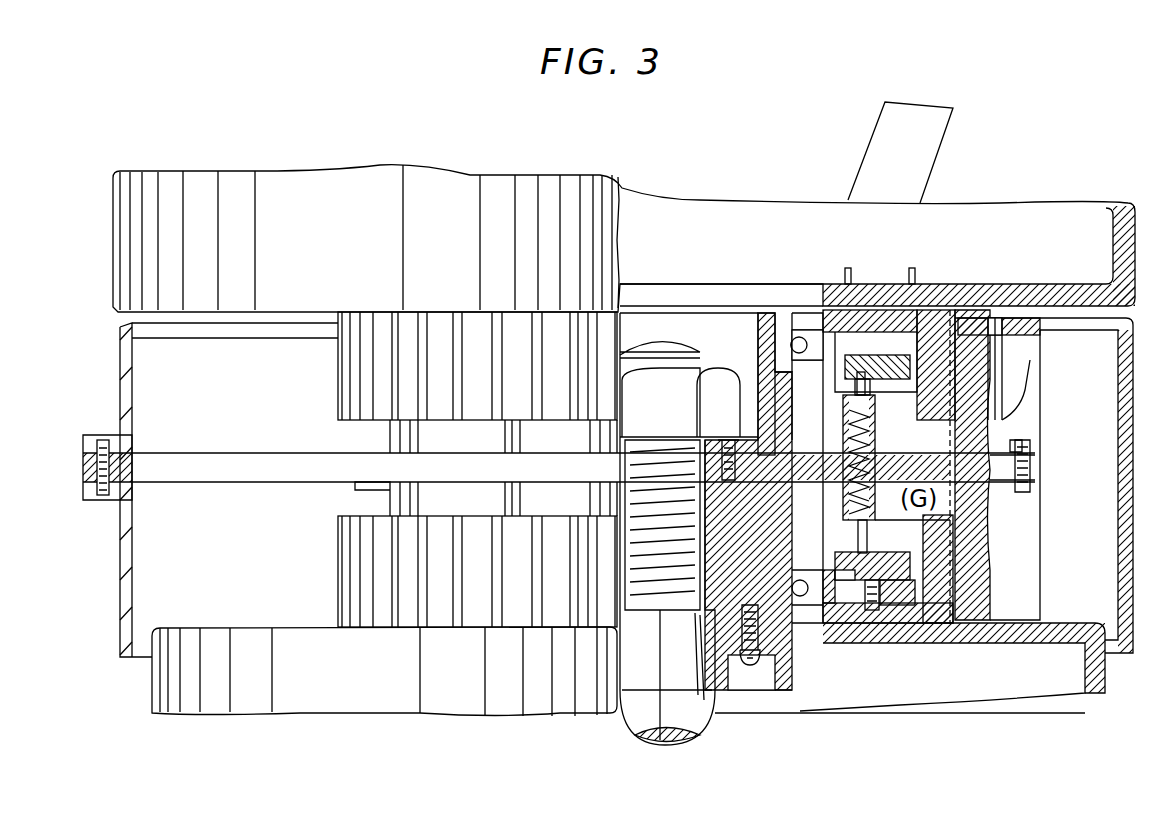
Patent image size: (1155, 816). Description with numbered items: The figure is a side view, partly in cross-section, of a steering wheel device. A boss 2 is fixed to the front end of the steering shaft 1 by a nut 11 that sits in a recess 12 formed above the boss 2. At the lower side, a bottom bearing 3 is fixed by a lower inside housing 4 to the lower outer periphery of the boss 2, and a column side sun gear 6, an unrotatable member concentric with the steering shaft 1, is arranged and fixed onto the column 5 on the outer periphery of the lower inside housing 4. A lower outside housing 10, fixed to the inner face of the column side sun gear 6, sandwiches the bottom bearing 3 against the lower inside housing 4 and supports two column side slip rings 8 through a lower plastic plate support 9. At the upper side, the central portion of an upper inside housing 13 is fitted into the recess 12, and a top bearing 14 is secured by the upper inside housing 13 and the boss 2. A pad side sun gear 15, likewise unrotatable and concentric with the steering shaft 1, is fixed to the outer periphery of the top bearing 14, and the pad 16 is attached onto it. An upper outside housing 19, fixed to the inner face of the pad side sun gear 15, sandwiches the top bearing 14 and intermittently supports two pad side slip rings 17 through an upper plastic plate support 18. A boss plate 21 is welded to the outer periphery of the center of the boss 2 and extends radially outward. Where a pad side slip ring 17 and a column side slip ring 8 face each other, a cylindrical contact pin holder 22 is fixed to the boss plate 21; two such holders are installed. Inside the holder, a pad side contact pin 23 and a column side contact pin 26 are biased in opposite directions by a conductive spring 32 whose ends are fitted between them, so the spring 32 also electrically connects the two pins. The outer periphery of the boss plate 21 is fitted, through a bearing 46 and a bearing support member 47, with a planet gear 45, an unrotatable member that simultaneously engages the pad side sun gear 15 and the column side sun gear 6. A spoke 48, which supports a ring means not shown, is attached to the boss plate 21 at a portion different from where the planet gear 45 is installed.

The steering shaft 1 is at (716, 732).
The boss 2 is at (520, 495).
The bottom bearing 3 is at (818, 605).
The lower inside housing 4 is at (795, 678).
The column 5 is at (1020, 640).
The column side sun gear 6 is at (475, 615).
The column side slip rings 8 is at (862, 555).
The lower plastic plate support 9 is at (880, 610).
The lower outside housing 10 is at (905, 605).
The nut 11 is at (662, 352).
The recess 12 is at (778, 380).
The upper inside housing 13 is at (762, 345).
The top bearing 14 is at (800, 337).
The pad side sun gear 15 is at (468, 312).
The pad 16 is at (1032, 215).
The pad side slip rings 17 is at (880, 380).
The upper plastic plate support 18 is at (885, 355).
The upper outside housing 19 is at (867, 330).
The boss plate 21 is at (245, 453).
The contact pin holder 22 is at (392, 437).
The pad side contact pin 23 is at (856, 388).
The column side contact pin 26 is at (858, 535).
The conductive spring 32 is at (875, 440).
The planet gear 45 is at (978, 508).
The bearing 46 is at (1018, 318).
The bearing support member 47 is at (1040, 392).
The spoke 48 is at (878, 142).